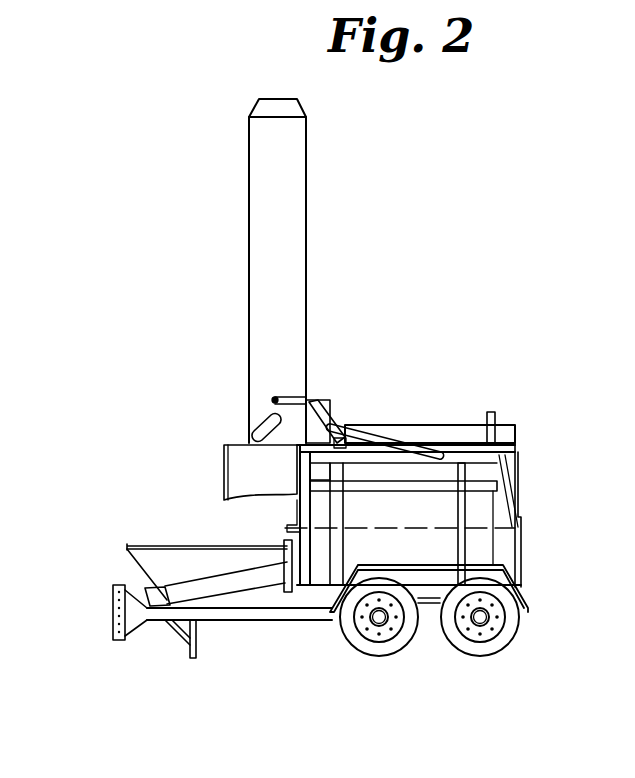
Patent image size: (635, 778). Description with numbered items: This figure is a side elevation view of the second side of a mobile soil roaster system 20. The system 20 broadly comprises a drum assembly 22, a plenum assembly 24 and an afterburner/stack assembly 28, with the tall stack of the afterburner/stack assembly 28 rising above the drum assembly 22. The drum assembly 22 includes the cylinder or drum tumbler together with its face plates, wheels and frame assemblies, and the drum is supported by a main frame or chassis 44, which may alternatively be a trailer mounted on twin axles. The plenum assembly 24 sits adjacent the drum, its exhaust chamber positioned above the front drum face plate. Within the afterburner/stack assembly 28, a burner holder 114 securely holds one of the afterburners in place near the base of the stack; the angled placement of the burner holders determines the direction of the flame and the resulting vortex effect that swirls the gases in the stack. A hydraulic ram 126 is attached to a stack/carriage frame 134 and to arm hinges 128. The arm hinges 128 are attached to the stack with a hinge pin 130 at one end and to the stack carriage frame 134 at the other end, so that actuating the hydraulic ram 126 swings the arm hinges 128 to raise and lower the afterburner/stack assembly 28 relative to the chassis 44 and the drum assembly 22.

The soil roaster system 20 is at (395, 278).
The drum assembly 22 is at (473, 518).
The plenum assembly 24 is at (247, 473).
The afterburner/stack assembly 28 is at (260, 166).
The main frame or chassis 44 is at (238, 610).
The burner holder 114 is at (268, 416).
The hydraulic ram 126 is at (405, 442).
The arm hinges 128 is at (287, 398).
The hinge pin 130 is at (276, 398).
The stack/carriage frame 134 is at (517, 440).